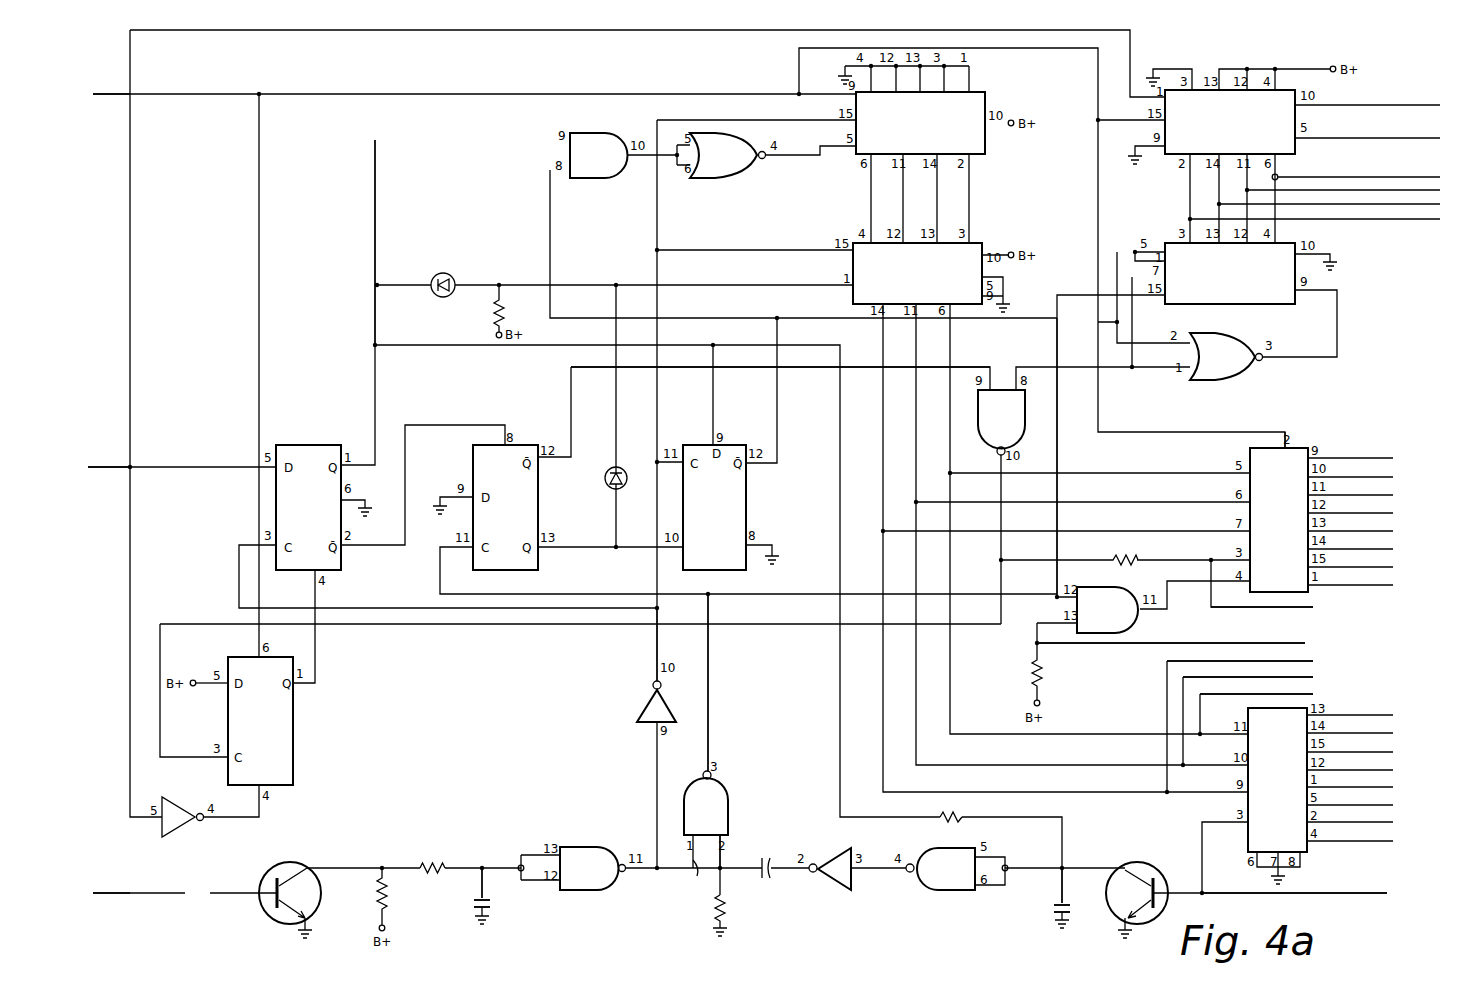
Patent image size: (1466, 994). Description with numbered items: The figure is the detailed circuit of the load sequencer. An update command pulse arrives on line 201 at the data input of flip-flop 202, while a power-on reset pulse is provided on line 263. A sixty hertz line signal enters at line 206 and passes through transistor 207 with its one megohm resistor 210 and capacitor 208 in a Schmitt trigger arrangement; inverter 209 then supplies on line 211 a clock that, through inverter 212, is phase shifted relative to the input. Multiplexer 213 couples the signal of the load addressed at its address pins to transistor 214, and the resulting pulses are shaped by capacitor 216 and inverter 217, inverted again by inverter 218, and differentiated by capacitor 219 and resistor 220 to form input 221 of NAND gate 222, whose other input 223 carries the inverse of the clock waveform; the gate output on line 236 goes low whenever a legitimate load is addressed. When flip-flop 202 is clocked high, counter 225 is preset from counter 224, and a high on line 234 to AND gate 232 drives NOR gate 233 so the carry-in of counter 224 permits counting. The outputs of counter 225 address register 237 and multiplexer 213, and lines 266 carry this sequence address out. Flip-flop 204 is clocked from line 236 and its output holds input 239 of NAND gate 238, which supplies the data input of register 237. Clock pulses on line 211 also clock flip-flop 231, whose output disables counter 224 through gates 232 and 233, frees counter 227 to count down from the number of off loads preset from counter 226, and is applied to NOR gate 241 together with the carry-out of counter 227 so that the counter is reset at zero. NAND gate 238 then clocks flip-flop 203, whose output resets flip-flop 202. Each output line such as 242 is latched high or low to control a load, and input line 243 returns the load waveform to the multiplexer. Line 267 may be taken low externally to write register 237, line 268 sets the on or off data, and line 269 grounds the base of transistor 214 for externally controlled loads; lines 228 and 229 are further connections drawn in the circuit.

The update command line 201 is at (88, 465).
The flip-flop 202 is at (305, 443).
The flip-flop 203 is at (293, 718).
The flip-flop 204 is at (528, 443).
The 60 hz line signal input 206 is at (107, 888).
The transistor 207 is at (270, 873).
The capacitor 208 is at (490, 903).
The inverter 209 is at (595, 848).
The resistor 210 is at (435, 862).
The clock line 211 is at (654, 656).
The inverter 212 is at (637, 720).
The multiplexer 213 is at (1308, 852).
The transistor 214 is at (1142, 865).
The capacitor 216 is at (1050, 908).
The inverter 217 is at (945, 892).
The inverter 218 is at (828, 882).
The capacitor 219 is at (775, 862).
The resistor 220 is at (718, 905).
The NAND gate input 221 is at (740, 843).
The NAND gate 222 is at (728, 790).
The NAND gate input 223 is at (697, 872).
The counter 224 is at (985, 154).
The counter 225 is at (982, 243).
The counter 226 is at (1178, 157).
The counter 227 is at (1165, 243).
The line 228 is at (1063, 598).
The AND gate 229 is at (1138, 620).
The flip-flop 231 is at (746, 508).
The AND gate 232 is at (597, 179).
The NOR gate 233 is at (737, 176).
The AND gate input line 234 is at (443, 142).
The legitimate load line 236 is at (708, 702).
The addressable register 237 is at (1293, 447).
The NAND gate 238 is at (1003, 388).
The NAND gate input 239 is at (978, 367).
The NOR gate 241 is at (1200, 381).
The output line 242 is at (1360, 456).
The input line 243 is at (1368, 712).
The power-on reset line 263 is at (192, 98).
The address lines 266 is at (1313, 700).
The external write command line 267 is at (1305, 645).
The external data line 268 is at (1300, 612).
The base grounding line 269 is at (1368, 896).